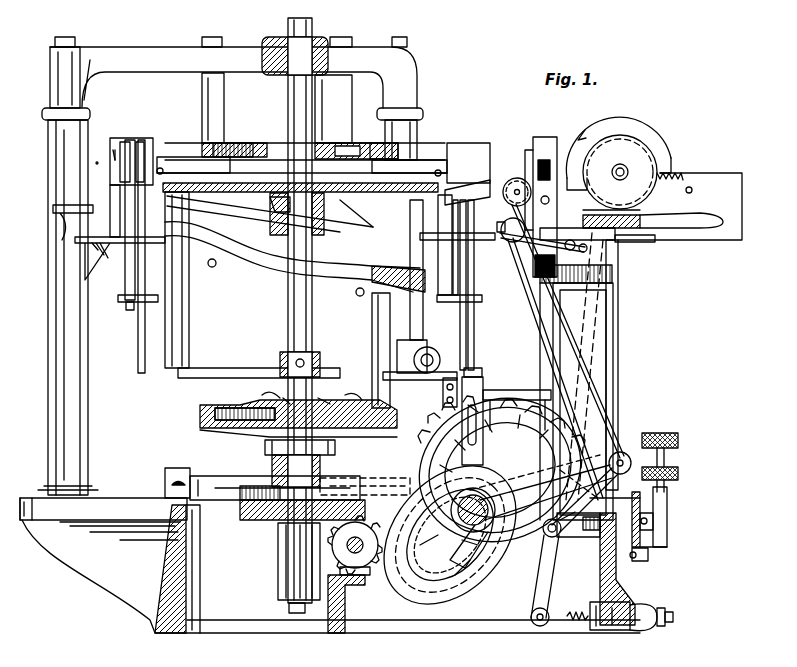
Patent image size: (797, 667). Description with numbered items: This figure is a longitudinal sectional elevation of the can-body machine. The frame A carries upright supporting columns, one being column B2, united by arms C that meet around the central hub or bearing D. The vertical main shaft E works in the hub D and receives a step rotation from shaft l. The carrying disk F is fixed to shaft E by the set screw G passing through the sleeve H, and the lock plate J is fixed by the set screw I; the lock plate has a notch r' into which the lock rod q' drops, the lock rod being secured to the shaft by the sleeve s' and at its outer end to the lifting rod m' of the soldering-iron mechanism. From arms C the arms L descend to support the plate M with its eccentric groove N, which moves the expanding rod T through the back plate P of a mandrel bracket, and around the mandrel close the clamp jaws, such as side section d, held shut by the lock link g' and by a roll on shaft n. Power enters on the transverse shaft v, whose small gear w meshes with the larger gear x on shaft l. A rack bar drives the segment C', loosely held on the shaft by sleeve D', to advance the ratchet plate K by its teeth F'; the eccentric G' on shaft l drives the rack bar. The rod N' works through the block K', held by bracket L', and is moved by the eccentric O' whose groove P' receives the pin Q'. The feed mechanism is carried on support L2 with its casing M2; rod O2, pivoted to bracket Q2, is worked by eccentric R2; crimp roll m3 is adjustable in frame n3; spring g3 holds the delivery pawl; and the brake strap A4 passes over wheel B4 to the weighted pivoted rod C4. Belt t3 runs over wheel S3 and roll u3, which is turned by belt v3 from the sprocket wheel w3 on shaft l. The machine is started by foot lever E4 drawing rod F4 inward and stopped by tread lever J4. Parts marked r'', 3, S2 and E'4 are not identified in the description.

The uniting arms C is at (236, 93).
The central hub or bearing D is at (298, 306).
The downwardly extending arms L is at (265, 108).
The plate M is at (240, 143).
The eccentric groove N is at (383, 127).
The expanding rod T is at (165, 160).
The back plate P is at (300, 175).
The side jaw section d is at (100, 160).
The carrying disk F is at (300, 177).
The sleeve H is at (325, 225).
The set screw G is at (267, 218).
The vertical main shaft E is at (295, 285).
The lock plate J is at (200, 415).
The notch r' is at (268, 388).
The sleeve s' is at (283, 395).
The lock rod q' is at (332, 390).
The spring catch r'' is at (354, 388).
The supporting column B2 is at (375, 338).
The set screw I is at (335, 455).
The sleeve D' is at (305, 470).
The segment C' is at (365, 474).
The stop block 3 is at (165, 482).
The ratchet teeth F' is at (260, 474).
The ratchet plate K is at (293, 556).
The frame A is at (330, 565).
The transverse operating shaft v is at (365, 565).
The small gear wheel w is at (376, 575).
The eccentric groove P' is at (449, 535).
The sprocket wheel w3 is at (465, 528).
The eccentric O' is at (429, 549).
The rotating shaft l is at (472, 586).
The pin Q' is at (505, 470).
The larger gear x is at (435, 428).
The lock link g' is at (466, 403).
The eccentric G' is at (577, 540).
The rod N' is at (475, 265).
The lifting rod m' is at (491, 359).
The block K' is at (493, 412).
The bracket L' is at (519, 396).
The frame n3 is at (555, 140).
The crimp roll m3 is at (525, 160).
The wheel S3 is at (505, 182).
The pivoted rod C4 is at (500, 222).
The endless belt t3 is at (600, 312).
The shaft n is at (542, 300).
The support L2 is at (618, 355).
The brake strap A4 is at (625, 240).
The wheel B4 is at (618, 163).
The spring g3 is at (672, 175).
The outer frame or casing M2 is at (680, 206).
The slide bar S2 is at (653, 220).
The roll u3 is at (640, 432).
The belt v3 is at (535, 468).
The tread lever J4 is at (678, 440).
The knurled nut E'4 is at (677, 475).
The eccentric R2 is at (640, 498).
The foot lever E4 is at (667, 520).
The rod F4 is at (648, 560).
The rod O2 is at (560, 538).
The bracket Q2 is at (548, 595).